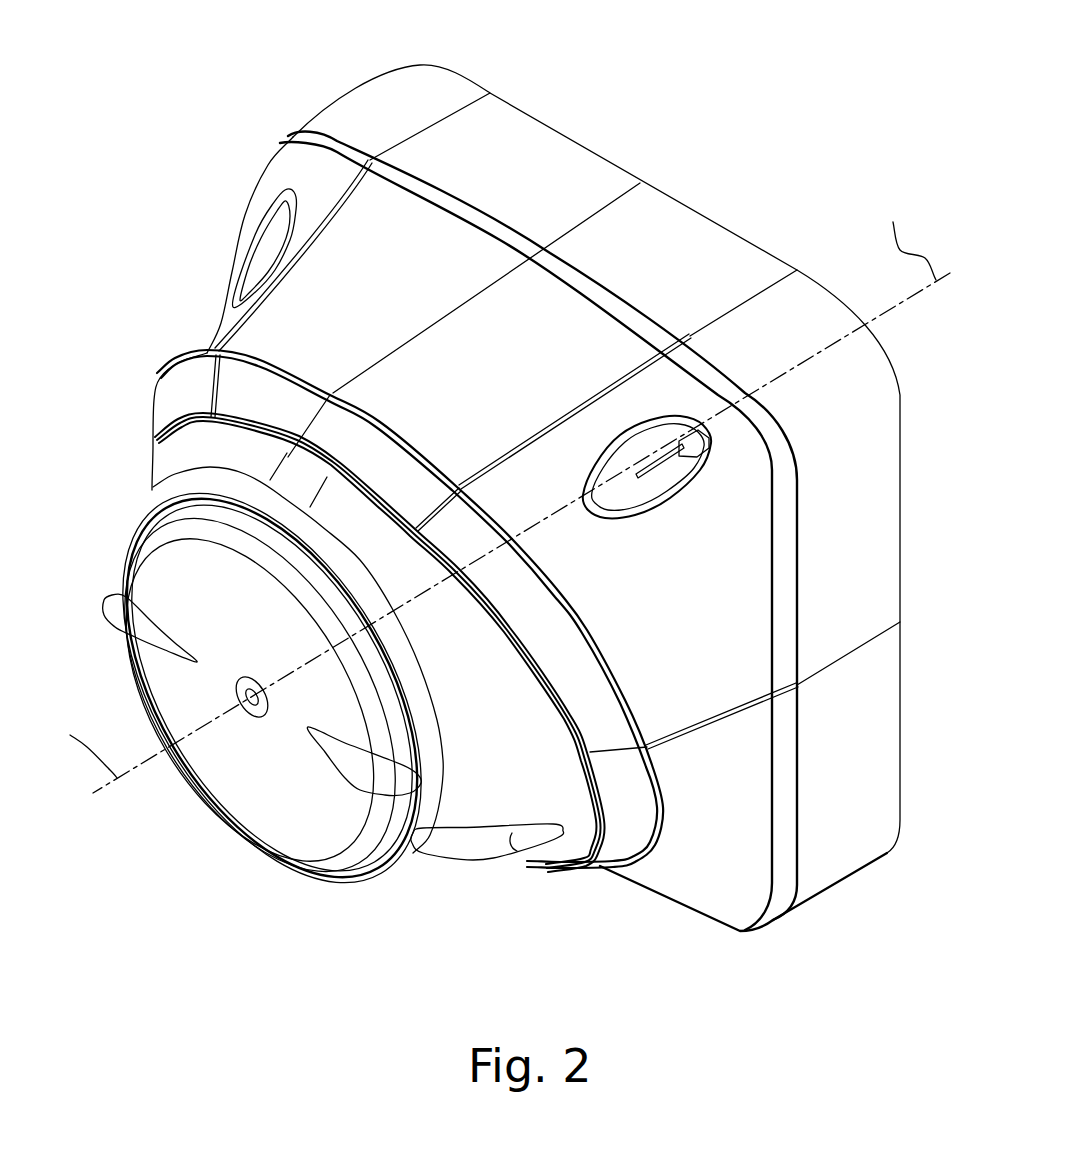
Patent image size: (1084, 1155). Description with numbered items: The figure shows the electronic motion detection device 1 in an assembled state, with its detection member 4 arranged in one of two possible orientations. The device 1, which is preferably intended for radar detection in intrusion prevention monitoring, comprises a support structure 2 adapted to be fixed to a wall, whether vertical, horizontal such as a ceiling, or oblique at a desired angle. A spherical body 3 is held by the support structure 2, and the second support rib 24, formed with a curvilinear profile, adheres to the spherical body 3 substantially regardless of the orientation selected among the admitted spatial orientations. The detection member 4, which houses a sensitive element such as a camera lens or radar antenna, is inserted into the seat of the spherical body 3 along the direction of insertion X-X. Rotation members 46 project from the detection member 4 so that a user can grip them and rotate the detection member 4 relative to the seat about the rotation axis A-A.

The electronic motion detection device 1 is at (729, 132).
The support structure 2 is at (707, 887).
The spherical body 3 is at (477, 810).
The detection member 4 is at (240, 782).
The second support rib 24 is at (567, 710).
The rotation members 46 is at (118, 593).